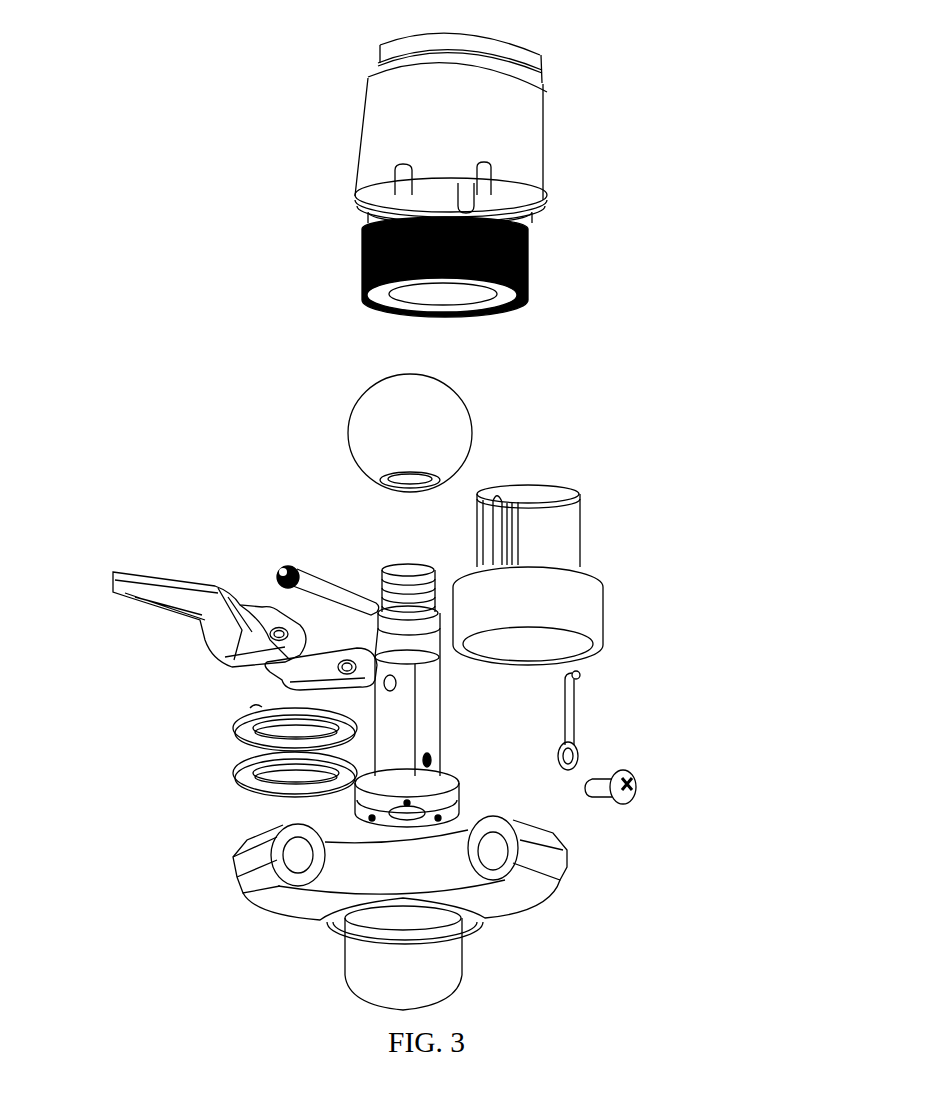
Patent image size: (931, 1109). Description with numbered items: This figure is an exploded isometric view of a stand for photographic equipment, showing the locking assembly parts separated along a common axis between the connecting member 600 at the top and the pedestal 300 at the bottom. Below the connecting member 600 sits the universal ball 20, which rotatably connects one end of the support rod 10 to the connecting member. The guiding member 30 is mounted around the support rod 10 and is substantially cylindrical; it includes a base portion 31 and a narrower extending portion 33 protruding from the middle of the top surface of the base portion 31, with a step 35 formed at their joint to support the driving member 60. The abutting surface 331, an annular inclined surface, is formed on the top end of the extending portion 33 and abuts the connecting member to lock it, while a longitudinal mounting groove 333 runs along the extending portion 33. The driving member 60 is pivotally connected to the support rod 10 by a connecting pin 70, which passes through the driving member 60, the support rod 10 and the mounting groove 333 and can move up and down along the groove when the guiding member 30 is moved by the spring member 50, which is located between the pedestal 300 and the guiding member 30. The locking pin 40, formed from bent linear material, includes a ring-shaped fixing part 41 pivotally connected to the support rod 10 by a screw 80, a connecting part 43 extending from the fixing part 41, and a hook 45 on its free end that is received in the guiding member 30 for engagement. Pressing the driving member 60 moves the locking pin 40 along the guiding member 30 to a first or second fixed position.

The cap 600 is at (457, 117).
The universal ball 20 is at (443, 418).
The guiding member 30 is at (605, 518).
The extending portion 33 is at (590, 469).
The abutting surface 331 is at (563, 494).
The mounting groove 333 is at (503, 493).
The step 35 is at (567, 567).
The base portion 31 is at (578, 626).
The connecting pin 70 is at (286, 566).
The support rod 10 is at (408, 698).
The driving member 60 is at (217, 623).
The spring member 50 is at (233, 768).
The pedestal 300 is at (367, 860).
The locking pin 40 is at (667, 726).
The hook 45 is at (580, 675).
The connecting part 43 is at (574, 707).
The fixing part 41 is at (578, 760).
The screw 80 is at (630, 797).